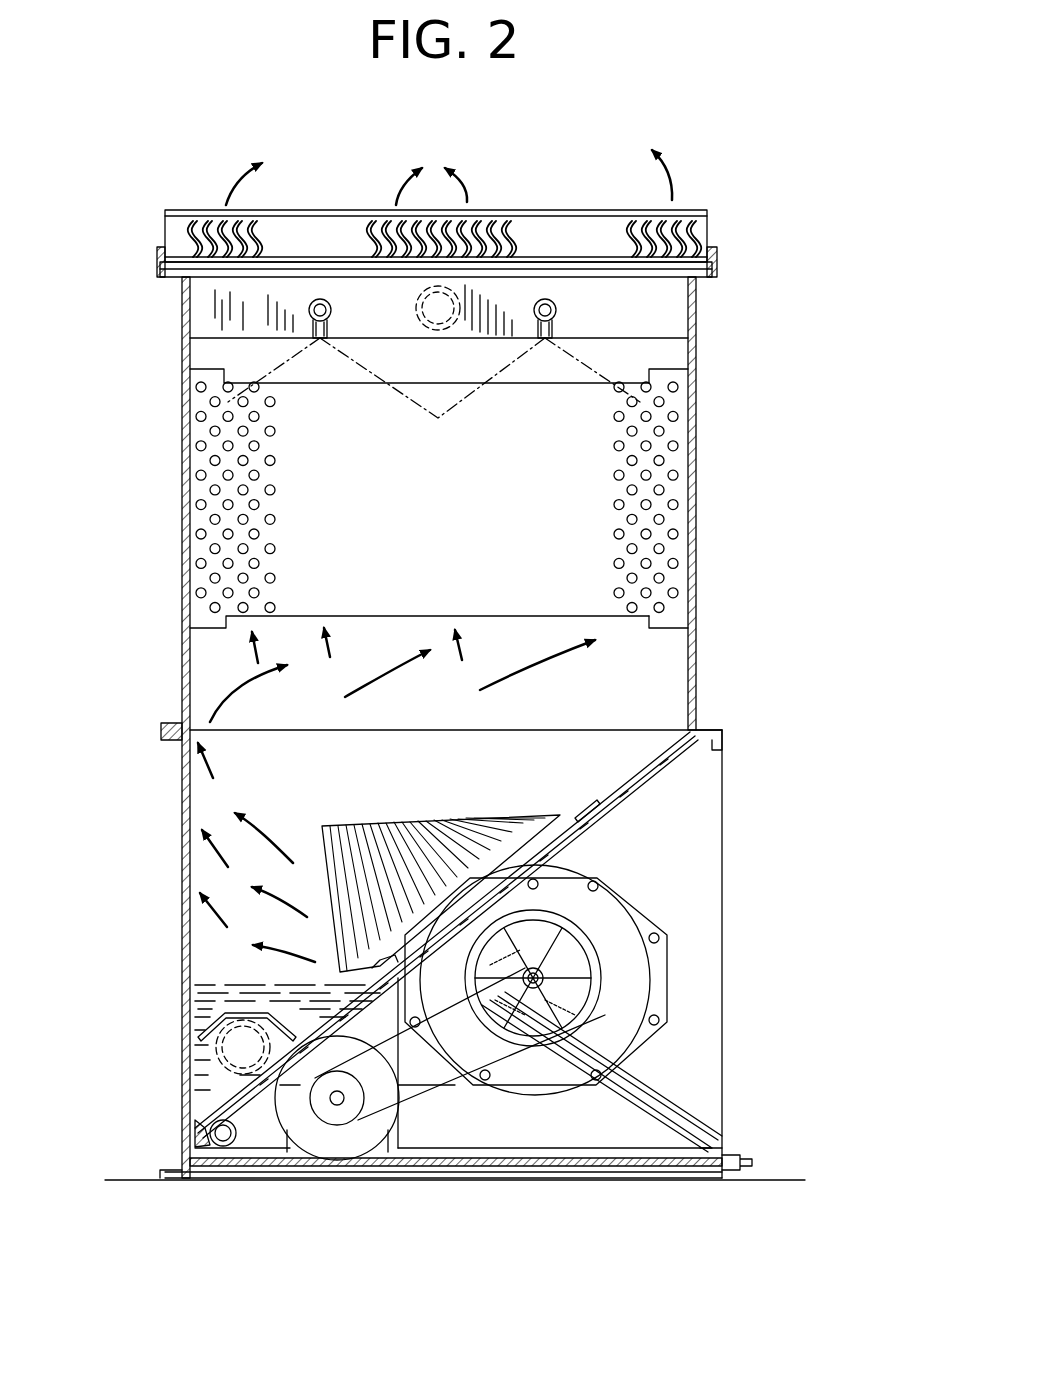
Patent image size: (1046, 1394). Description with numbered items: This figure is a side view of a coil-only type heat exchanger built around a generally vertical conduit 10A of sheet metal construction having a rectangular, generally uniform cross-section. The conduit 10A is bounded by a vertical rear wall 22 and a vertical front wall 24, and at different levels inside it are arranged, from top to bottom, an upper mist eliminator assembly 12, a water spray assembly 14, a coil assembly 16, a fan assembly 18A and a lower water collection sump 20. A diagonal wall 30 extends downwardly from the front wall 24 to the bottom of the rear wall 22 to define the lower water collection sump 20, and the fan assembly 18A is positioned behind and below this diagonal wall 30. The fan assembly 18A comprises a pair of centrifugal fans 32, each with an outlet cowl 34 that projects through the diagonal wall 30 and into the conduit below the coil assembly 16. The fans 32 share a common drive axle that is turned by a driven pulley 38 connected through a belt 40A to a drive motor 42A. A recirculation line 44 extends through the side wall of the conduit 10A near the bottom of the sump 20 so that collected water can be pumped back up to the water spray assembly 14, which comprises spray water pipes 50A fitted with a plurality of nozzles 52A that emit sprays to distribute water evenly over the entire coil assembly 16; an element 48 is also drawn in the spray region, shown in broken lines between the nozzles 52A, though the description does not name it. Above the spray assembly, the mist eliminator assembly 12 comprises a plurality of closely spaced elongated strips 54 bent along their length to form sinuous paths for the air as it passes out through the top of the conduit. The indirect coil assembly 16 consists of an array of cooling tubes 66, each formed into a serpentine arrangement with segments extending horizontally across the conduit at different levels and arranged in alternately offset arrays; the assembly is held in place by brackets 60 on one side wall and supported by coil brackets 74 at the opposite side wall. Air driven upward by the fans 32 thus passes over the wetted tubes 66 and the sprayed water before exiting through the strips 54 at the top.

The vertical conduit 10A is at (735, 418).
The upper mist eliminator assembly 12 is at (548, 185).
The water spray assembly 14 is at (310, 303).
The coil assembly 16 is at (450, 690).
The fan assembly 18A is at (650, 878).
The lower water collection sump 20 is at (198, 1025).
The rear wall 22 is at (182, 660).
The front wall 24 is at (696, 662).
The diagonal wall 30 is at (650, 773).
The centrifugal fan 32 is at (595, 905).
The outlet cowl 34 is at (428, 828).
The driven pulley 38 is at (575, 978).
The belt 40A is at (436, 1090).
The drive motor 42A is at (342, 1130).
The recirculation line 44 is at (210, 1133).
The spray manifold pipe 48 is at (470, 340).
The spray water pipe 50A is at (335, 305).
The nozzle 52A is at (330, 330).
The elongated strip 54 is at (185, 216).
The bracket 60 is at (200, 360).
The cooling tube 66 is at (257, 486).
The coil bracket 74 is at (672, 365).